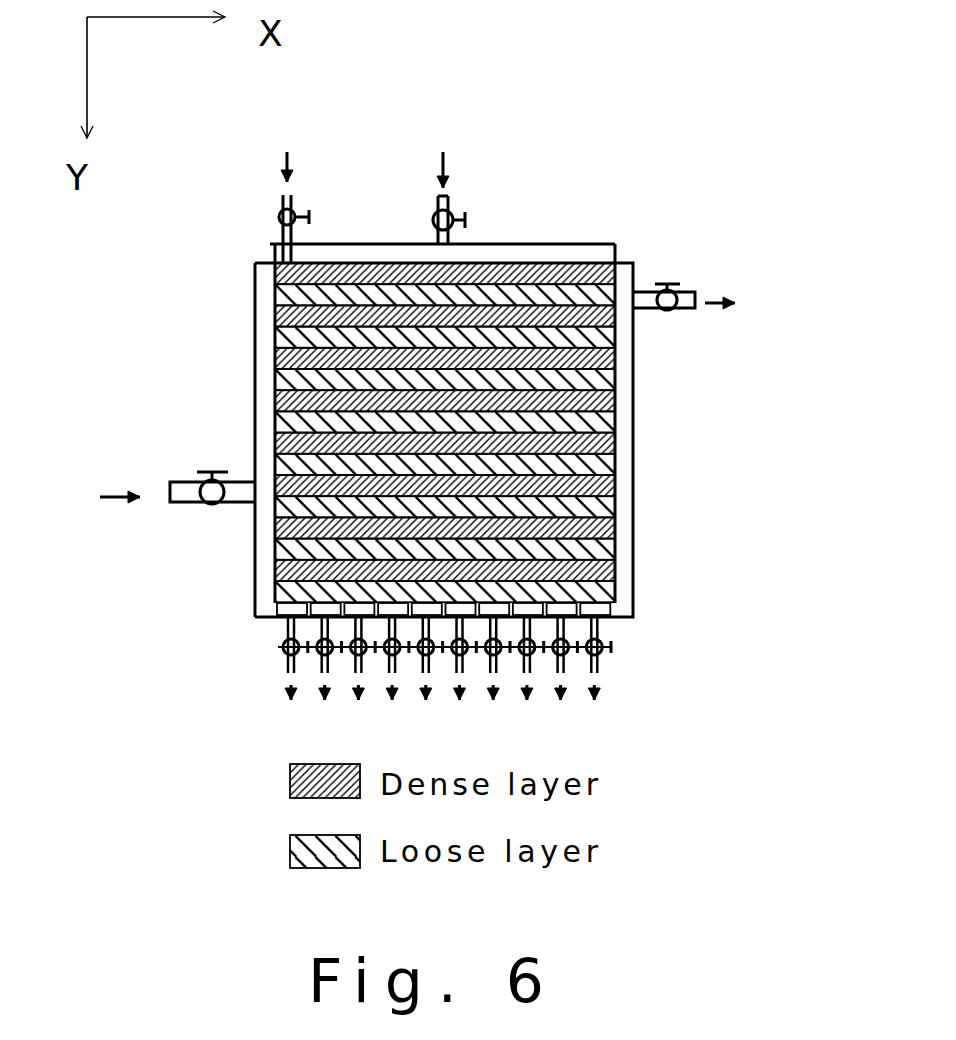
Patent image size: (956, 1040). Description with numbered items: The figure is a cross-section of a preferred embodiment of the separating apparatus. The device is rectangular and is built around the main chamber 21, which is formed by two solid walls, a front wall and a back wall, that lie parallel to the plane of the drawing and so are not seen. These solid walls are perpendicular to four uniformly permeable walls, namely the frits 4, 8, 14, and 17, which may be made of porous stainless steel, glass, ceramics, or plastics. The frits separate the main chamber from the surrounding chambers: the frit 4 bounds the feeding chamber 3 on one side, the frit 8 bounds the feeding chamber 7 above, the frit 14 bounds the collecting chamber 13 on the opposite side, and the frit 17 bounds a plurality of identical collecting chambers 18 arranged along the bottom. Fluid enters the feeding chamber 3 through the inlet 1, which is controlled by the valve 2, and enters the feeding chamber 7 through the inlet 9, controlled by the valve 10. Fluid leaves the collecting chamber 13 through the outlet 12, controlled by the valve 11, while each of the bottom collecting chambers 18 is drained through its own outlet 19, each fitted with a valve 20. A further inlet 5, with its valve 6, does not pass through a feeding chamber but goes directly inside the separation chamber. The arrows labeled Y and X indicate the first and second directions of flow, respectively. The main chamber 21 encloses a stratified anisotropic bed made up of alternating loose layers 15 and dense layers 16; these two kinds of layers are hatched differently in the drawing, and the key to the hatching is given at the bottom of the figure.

The inlet 1 is at (168, 484).
The valve 2 is at (208, 469).
The feeding chamber 3 is at (256, 427).
The frit 4 is at (273, 333).
The inlet 5 is at (278, 237).
The valve 6 is at (281, 209).
The feeding chamber 7 is at (343, 242).
The frit 8 is at (388, 259).
The inlet 9 is at (450, 196).
The valve 10 is at (470, 228).
The valve 11 is at (667, 282).
The outlet 12 is at (688, 290).
The collecting chamber 13 is at (625, 374).
The frit 14 is at (619, 420).
The loose layers 15 is at (567, 464).
The dense layers 16 is at (584, 487).
The frit 17 is at (570, 594).
The collecting chambers 18 is at (600, 607).
The outlets 19 is at (600, 628).
The valves 20 is at (612, 649).
The main chamber 21 is at (406, 525).